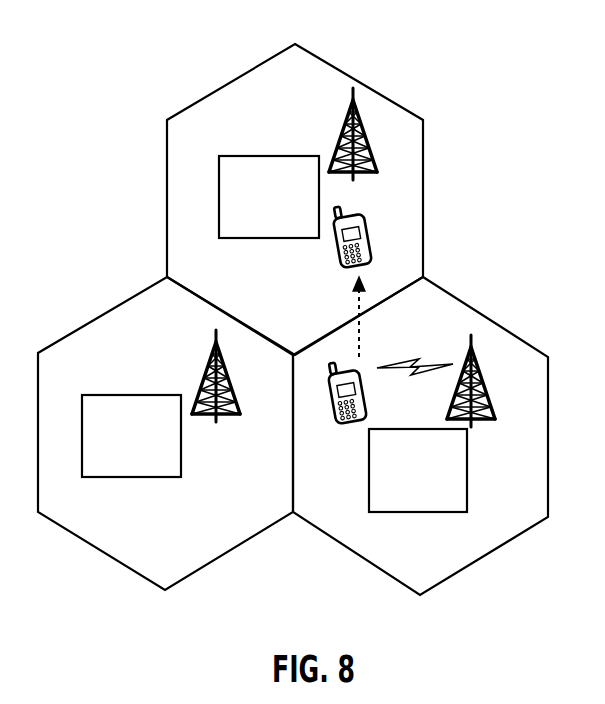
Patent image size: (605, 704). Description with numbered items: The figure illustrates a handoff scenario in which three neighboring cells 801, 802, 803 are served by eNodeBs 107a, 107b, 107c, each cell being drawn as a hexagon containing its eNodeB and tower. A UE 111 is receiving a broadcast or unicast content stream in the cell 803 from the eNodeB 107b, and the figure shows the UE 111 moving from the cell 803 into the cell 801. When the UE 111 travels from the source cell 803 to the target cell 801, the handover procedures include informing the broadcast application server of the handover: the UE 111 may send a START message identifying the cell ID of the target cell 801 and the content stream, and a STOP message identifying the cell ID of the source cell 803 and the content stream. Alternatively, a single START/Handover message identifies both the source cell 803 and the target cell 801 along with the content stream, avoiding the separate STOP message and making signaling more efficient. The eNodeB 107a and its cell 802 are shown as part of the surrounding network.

The eNodeB 107a is at (181, 438).
The eNodeB 107b is at (467, 465).
The eNodeB 107c is at (265, 156).
The UE 111 is at (369, 219).
The cell 801 is at (300, 304).
The cell 802 is at (180, 556).
The cell 803 is at (435, 557).